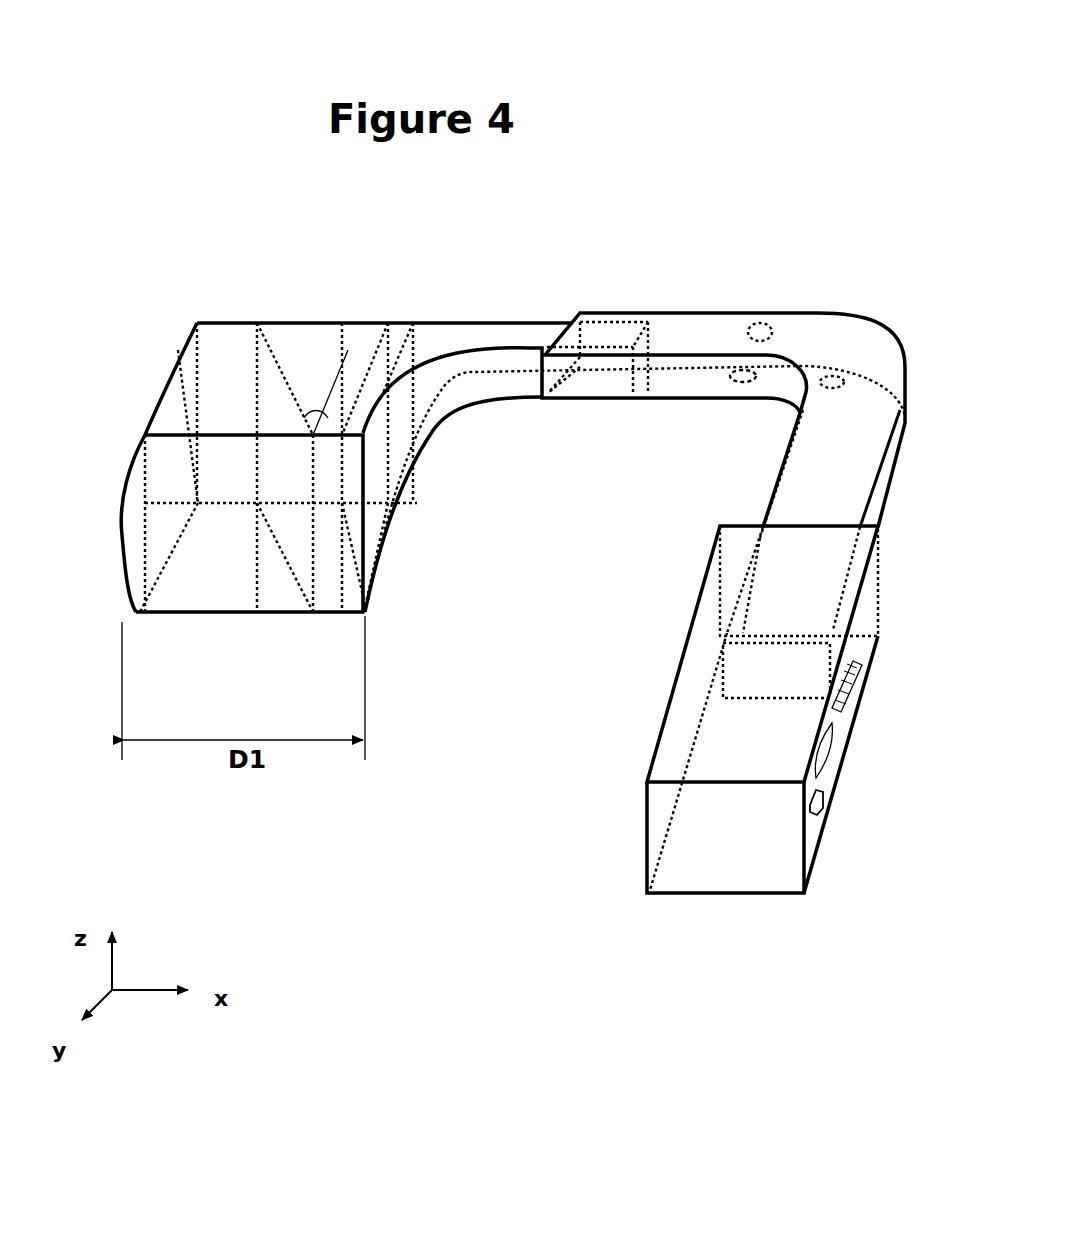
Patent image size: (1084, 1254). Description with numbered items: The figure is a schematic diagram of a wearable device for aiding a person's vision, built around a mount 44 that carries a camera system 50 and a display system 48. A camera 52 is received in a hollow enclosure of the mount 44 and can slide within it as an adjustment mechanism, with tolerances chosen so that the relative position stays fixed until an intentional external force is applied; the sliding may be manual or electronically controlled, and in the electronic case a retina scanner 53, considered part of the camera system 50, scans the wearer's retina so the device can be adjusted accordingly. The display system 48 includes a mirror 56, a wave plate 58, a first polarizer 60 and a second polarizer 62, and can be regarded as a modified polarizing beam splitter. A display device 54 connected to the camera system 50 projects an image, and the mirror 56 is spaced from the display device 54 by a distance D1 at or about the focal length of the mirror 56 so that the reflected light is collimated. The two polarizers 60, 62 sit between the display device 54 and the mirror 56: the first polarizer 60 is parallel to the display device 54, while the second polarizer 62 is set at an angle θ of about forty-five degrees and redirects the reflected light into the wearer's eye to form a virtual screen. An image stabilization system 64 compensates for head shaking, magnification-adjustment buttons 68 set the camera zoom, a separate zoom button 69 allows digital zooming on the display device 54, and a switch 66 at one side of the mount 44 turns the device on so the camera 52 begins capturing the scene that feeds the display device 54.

The mount 44 is at (640, 779).
The display system 48 is at (368, 628).
The camera system 50 is at (780, 405).
The camera 52 is at (740, 318).
The retina scanner 53 is at (766, 355).
The display device 54 is at (422, 334).
The mirror 56 is at (114, 545).
The wave plate 58 is at (205, 340).
The first polarizer 60 is at (395, 318).
The second polarizer 62 is at (294, 380).
The image stabilization system 64 is at (836, 372).
The switch 66 is at (826, 729).
The magnification-adjustment buttons 68 is at (860, 660).
The zoom button 69 is at (822, 801).